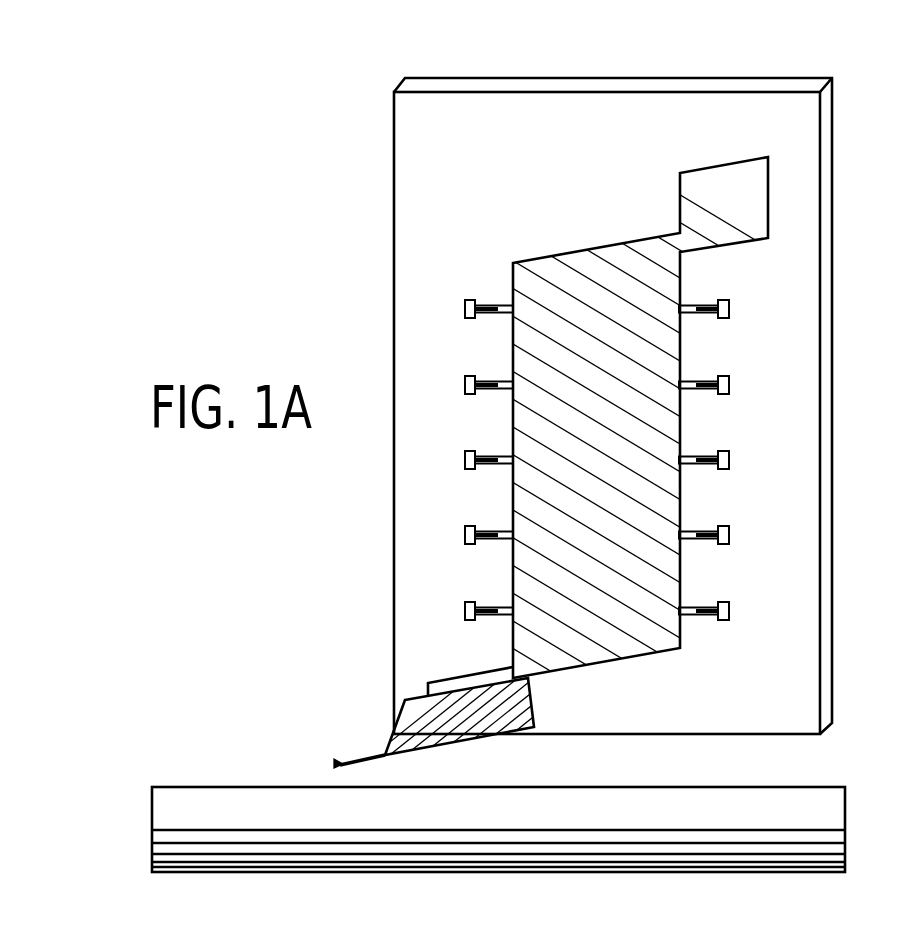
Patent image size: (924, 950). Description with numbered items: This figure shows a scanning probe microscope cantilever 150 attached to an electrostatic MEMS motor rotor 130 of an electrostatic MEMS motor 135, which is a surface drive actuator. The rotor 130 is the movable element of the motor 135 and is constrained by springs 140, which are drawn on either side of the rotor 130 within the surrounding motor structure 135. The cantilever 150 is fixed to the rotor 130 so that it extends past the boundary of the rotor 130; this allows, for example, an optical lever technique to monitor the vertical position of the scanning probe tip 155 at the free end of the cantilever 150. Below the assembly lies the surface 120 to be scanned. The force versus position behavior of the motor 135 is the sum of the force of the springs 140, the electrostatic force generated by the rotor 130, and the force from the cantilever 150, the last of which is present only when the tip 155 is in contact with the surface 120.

The electrostatic MEMS motor 135 is at (686, 50).
The electrostatic MEMS motor rotor 130 is at (640, 352).
The springs 140 is at (464, 307).
The scanning probe microscope cantilever 150 is at (368, 750).
The scanning probe tip 155 is at (336, 764).
The surface 120 is at (835, 812).